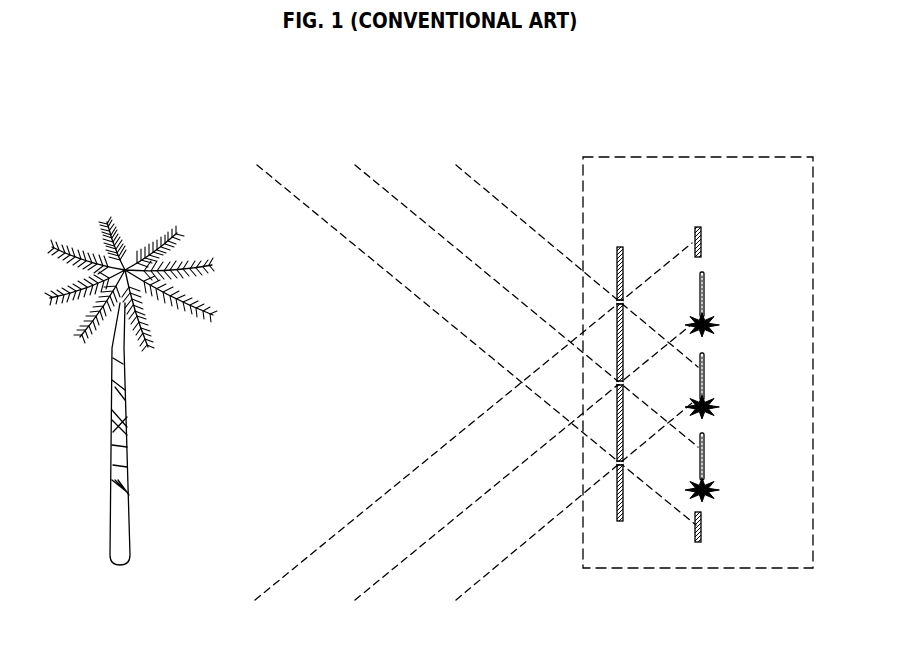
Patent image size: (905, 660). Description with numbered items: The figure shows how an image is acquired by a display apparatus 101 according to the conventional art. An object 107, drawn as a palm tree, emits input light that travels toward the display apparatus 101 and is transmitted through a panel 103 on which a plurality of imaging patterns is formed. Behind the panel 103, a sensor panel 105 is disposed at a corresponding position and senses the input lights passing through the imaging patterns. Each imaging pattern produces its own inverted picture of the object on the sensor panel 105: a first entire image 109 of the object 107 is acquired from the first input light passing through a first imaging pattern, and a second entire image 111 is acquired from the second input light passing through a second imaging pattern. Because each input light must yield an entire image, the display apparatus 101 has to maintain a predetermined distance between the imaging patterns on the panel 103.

The display apparatus 101 is at (688, 157).
The panel 103 is at (618, 247).
The sensor panel 105 is at (697, 227).
The object 107 is at (103, 228).
The first entire image 109 is at (705, 305).
The second entire image 111 is at (705, 387).